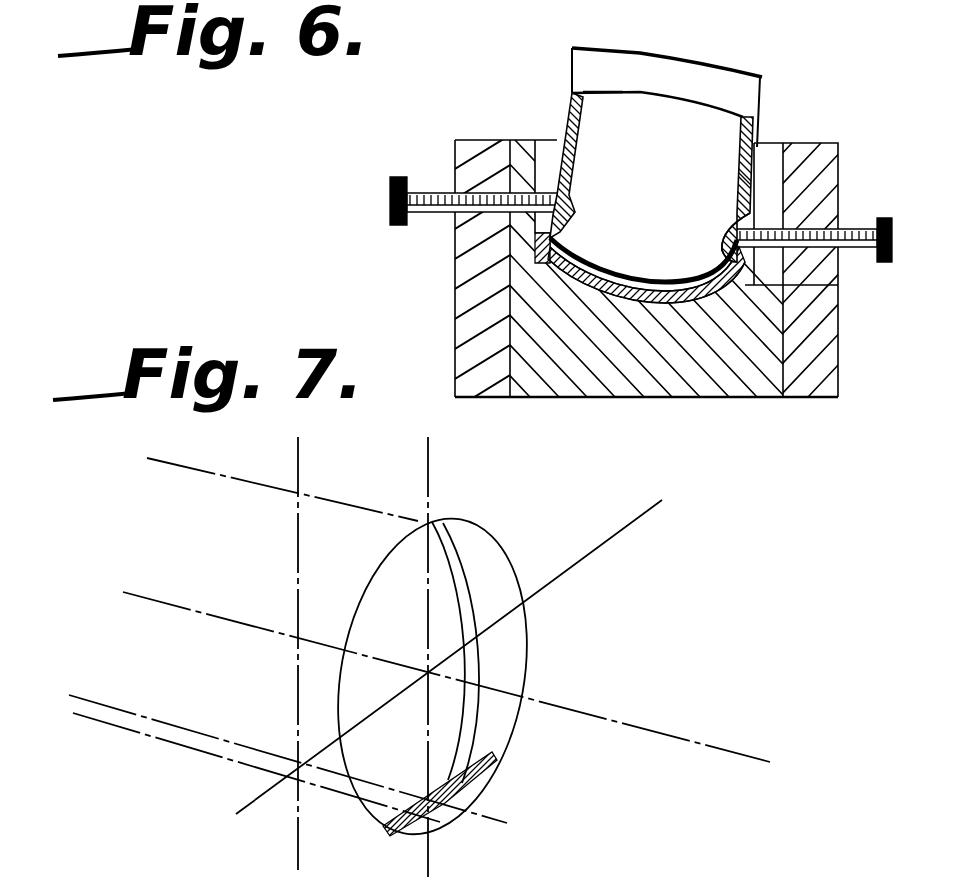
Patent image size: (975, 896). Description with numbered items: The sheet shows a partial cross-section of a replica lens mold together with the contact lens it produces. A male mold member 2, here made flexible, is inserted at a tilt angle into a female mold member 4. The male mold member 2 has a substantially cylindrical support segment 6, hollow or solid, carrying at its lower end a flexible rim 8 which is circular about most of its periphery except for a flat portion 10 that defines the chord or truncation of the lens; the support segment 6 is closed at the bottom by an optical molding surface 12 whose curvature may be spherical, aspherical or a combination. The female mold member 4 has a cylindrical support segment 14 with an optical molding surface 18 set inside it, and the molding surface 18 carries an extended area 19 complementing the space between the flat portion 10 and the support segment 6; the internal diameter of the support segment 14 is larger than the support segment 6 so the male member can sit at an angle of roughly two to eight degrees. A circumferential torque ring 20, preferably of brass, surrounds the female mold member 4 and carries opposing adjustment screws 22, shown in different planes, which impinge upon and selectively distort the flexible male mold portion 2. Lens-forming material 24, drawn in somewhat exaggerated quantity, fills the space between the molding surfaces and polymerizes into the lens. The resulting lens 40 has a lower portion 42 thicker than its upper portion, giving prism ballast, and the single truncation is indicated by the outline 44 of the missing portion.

In FIG. 6, the male mold member 2 is at (673, 165).
In FIG. 6, the female mold member 4 is at (743, 388).
In FIG. 6, the cylindrical support segment 6 is at (762, 88).
In FIG. 6, the flexible rim 8 is at (580, 242).
In FIG. 6, the flat portion 10 is at (710, 268).
In FIG. 6, the optical molding surface 12 is at (604, 283).
In FIG. 6, the cylindrical support segment 14 is at (773, 143).
In FIG. 6, the optical molding surface 18 is at (588, 272).
In FIG. 6, the extended area 19 is at (838, 285).
In FIG. 6, the torque ring 20 is at (818, 388).
In FIG. 6, the adjustment screws 22 is at (913, 207).
In FIG. 6, the lens-forming material 24 is at (637, 300).
In FIG. 7, the lens 40 is at (578, 511).
In FIG. 7, the lower portion 42 is at (497, 725).
In FIG. 7, the outline of missing portion 44 is at (442, 817).